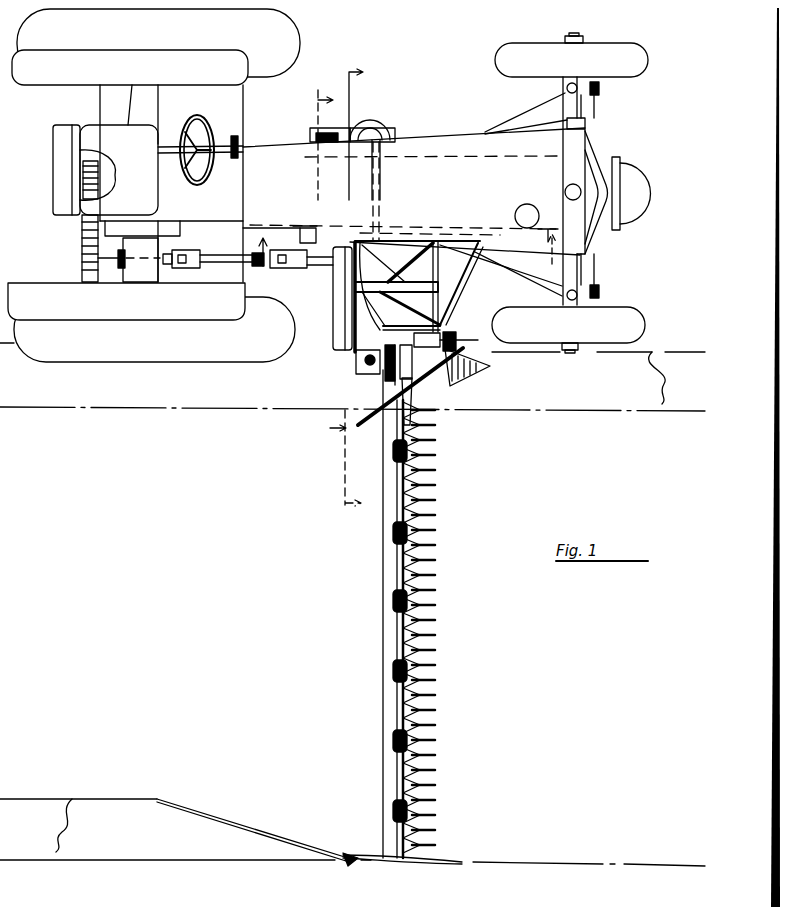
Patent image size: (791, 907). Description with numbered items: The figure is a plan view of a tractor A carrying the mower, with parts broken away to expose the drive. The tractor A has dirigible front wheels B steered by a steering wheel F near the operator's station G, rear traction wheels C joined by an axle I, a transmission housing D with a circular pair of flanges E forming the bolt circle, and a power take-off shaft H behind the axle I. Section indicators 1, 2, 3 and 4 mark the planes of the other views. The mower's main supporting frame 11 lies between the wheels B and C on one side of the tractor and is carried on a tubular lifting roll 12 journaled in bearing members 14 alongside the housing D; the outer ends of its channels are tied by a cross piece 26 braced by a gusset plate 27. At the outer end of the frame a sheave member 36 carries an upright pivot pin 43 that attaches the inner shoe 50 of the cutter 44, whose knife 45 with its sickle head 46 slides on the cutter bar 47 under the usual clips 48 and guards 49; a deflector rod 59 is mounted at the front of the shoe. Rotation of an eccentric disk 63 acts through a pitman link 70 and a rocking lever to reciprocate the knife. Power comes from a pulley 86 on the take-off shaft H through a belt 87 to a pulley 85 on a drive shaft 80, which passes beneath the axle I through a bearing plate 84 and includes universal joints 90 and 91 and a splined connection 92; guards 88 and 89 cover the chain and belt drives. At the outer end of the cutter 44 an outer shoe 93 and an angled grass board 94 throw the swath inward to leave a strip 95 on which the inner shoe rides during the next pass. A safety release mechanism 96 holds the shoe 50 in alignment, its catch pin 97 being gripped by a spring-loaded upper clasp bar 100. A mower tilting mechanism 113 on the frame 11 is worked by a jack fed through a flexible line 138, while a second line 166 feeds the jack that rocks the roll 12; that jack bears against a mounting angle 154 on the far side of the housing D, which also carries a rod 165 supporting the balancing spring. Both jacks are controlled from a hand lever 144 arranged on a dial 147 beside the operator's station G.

The section line 1 is at (169, 276).
The section line 2 is at (406, 263).
The section line 3 is at (351, 291).
The section line 4 is at (322, 266).
The main supporting frame 11 is at (470, 262).
The tubular lifting roll 12 is at (496, 260).
The bearing members 14 is at (296, 232).
The cross piece 26 is at (403, 314).
The gusset plate 27 is at (440, 322).
The sheave member 36 is at (356, 364).
The upright pivot pin 43 is at (380, 366).
The cutter 44 is at (441, 664).
The knife 45 is at (430, 485).
The sickle head 46 is at (414, 398).
The cutter bar 47 is at (390, 563).
The clips 48 is at (392, 606).
The guards 49 is at (428, 606).
The inner shoe 50 is at (482, 377).
The deflector rod 59 is at (360, 428).
The eccentric disk 63 is at (427, 340).
The pitman link 70 is at (388, 386).
The drive shaft 80 is at (333, 262).
The bearing plate 84 is at (122, 270).
The pulley 85 is at (82, 268).
The pulley 86 is at (83, 172).
The belt 87 is at (82, 232).
The guard 88 is at (333, 310).
The guard 89 is at (80, 240).
The universal joint 90 is at (290, 270).
The universal joint 91 is at (197, 244).
The splined connection 92 is at (240, 266).
The outer shoe 93 is at (412, 862).
The grass board 94 is at (285, 840).
The space or strip 95 is at (368, 602).
The safety release mechanism 96 is at (456, 334).
The catch pin 97 is at (457, 342).
The upper clasp bar 100 is at (456, 336).
The mower tilting mechanism 113 is at (390, 284).
The flexible line 138 is at (384, 132).
The hand lever 144 is at (234, 160).
The dial 147 is at (239, 143).
The mounting angle 154 is at (362, 128).
The rod 165 is at (325, 128).
The line 166 is at (378, 122).
The tractor A is at (459, 130).
The front wheels B is at (652, 66).
The rear traction wheels C is at (306, 27).
The transmission housing D is at (422, 148).
The flanges E is at (382, 190).
The steering wheel F is at (216, 121).
The operator's station G is at (93, 125).
The power take-off shaft H is at (83, 190).
The axle I is at (157, 104).